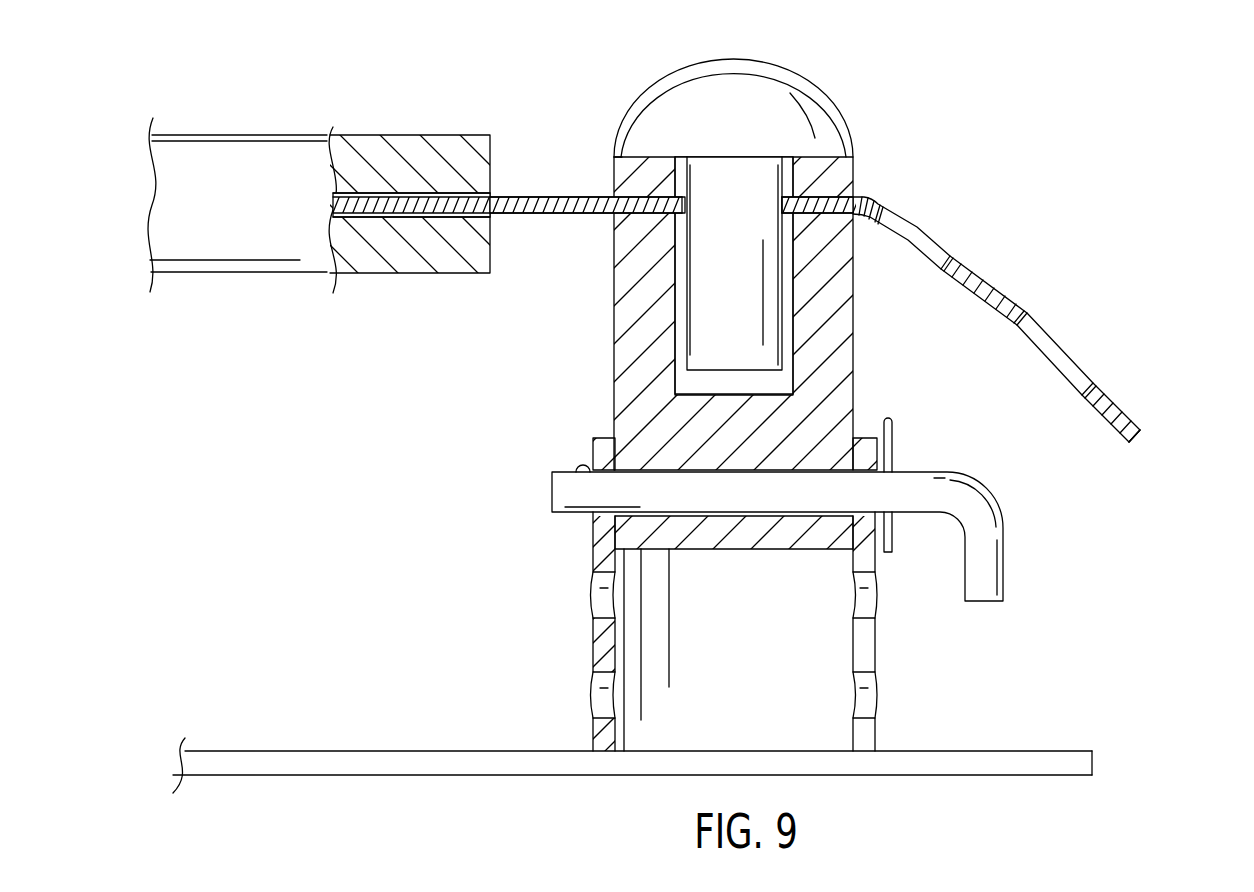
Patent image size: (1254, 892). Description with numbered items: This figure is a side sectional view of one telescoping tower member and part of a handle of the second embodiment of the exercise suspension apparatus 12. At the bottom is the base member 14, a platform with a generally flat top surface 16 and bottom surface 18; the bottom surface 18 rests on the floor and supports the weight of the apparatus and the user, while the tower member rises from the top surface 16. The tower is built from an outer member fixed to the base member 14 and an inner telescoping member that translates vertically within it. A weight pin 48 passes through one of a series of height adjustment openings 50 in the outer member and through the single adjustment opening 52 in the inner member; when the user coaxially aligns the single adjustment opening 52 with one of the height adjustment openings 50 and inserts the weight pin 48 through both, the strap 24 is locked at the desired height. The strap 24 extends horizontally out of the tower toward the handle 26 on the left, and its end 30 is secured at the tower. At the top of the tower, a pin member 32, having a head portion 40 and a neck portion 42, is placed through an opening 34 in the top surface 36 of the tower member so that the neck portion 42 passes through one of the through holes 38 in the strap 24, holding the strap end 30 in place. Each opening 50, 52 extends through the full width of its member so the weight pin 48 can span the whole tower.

The exercise suspension apparatus 12 is at (1090, 107).
The base member 14 is at (675, 748).
The top surface 16 is at (1062, 751).
The bottom surface 18 is at (1072, 776).
The strap 24 is at (542, 190).
The handle 26 is at (236, 150).
The end 30 is at (1138, 410).
The pin member 32 is at (627, 446).
The opening 34 is at (818, 152).
The top surface 36 is at (647, 157).
The through hole 38 is at (918, 222).
The head portion 40 is at (719, 123).
The neck portion 42 is at (719, 258).
The weight pin 48 is at (990, 578).
The height adjustment opening 50 is at (884, 515).
The single adjustment opening 52 is at (612, 460).